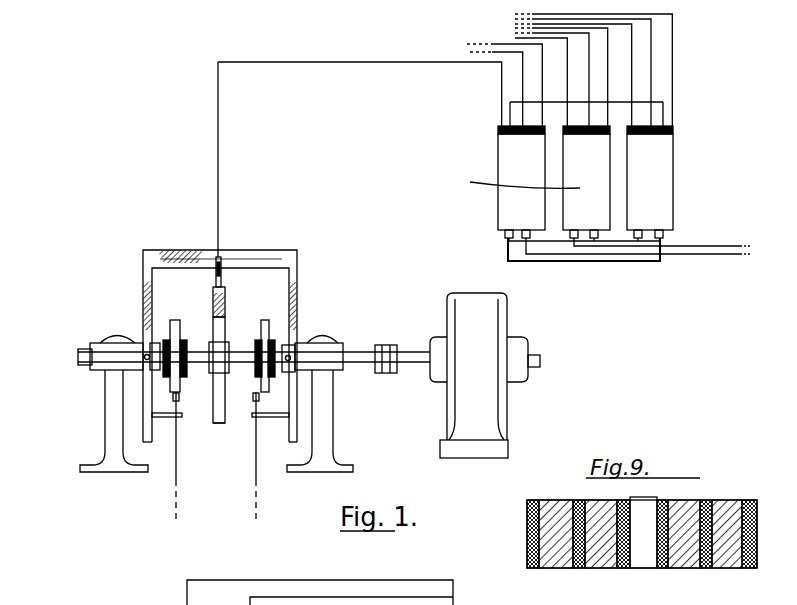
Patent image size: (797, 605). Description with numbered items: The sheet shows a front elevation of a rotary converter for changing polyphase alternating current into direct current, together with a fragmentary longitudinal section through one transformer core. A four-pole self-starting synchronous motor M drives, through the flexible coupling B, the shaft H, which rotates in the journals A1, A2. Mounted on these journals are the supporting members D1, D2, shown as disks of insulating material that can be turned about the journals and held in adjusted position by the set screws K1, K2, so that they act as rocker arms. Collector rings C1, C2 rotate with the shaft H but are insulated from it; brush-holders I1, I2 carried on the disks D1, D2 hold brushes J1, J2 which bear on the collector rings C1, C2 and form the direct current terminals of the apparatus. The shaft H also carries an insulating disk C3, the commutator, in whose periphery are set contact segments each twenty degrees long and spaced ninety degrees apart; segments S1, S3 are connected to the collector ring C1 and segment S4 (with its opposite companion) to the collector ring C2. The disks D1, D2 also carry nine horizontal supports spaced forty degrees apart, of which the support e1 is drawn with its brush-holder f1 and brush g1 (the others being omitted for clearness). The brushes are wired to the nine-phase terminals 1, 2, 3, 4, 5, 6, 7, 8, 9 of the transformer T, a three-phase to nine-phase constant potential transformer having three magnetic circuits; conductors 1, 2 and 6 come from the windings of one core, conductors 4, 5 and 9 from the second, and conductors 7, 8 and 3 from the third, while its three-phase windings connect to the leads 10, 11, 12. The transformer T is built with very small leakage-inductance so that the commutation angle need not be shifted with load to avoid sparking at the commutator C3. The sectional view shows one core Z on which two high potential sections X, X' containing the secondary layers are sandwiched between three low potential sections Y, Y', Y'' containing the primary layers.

In FIG. 1, the nine-phase terminal 1 is at (501, 84).
In FIG. 1, the nine-phase terminal 2 is at (522, 79).
In FIG. 1, the nine-phase terminal 3 is at (672, 79).
In FIG. 1, the nine-phase terminal 4 is at (567, 79).
In FIG. 1, the nine-phase terminal 5 is at (589, 79).
In FIG. 1, the nine-phase terminal 6 is at (542, 79).
In FIG. 1, the nine-phase terminal 7 is at (631, 79).
In FIG. 1, the nine-phase terminal 8 is at (651, 79).
In FIG. 1, the nine-phase terminal 9 is at (607, 79).
In FIG. 1, the lead 10 is at (738, 245).
In FIG. 1, the lead 11 is at (764, 245).
In FIG. 1, the lead 12 is at (746, 257).
In FIG. 1, the transformer T is at (559, 181).
In FIG. 1, the synchronous motor M is at (505, 318).
In FIG. 1, the flexible coupling B is at (386, 375).
In FIG. 1, the shaft H is at (80, 356).
In FIG. 1, the journal A1 is at (320, 338).
In FIG. 1, the journal A2 is at (120, 336).
In FIG. 1, the set screw K1 is at (291, 357).
In FIG. 1, the set screw K2 is at (144, 360).
In FIG. 1, the supporting member D1 is at (297, 283).
In FIG. 1, the supporting member D2 is at (143, 282).
In FIG. 1, the horizontal support e1 is at (221, 246).
In FIG. 1, the brush g1 is at (215, 285).
In FIG. 1, the brush-holder f1 is at (230, 356).
In FIG. 1, the contact segment S1 is at (213, 300).
In FIG. 1, the contact segment S3 is at (222, 426).
In FIG. 1, the contact segment S4 is at (209, 372).
In FIG. 1, the collector ring C1 is at (264, 333).
In FIG. 1, the collector ring C2 is at (172, 335).
In FIG. 1, the insulating disk C3 is at (212, 410).
In FIG. 1, the brush J1 is at (255, 406).
In FIG. 1, the brush J2 is at (177, 398).
In FIG. 1, the brush-holder I1 is at (255, 418).
In FIG. 1, the brush-holder I2 is at (168, 418).
In FIG. 9, the low potential section Y'' is at (645, 523).
In FIG. 9, the low potential section Y' is at (643, 523).
In FIG. 9, the low potential section Y is at (642, 523).
In FIG. 9, the high potential section X' is at (640, 543).
In FIG. 9, the high potential section X is at (642, 543).
In FIG. 9, the core Z is at (642, 568).